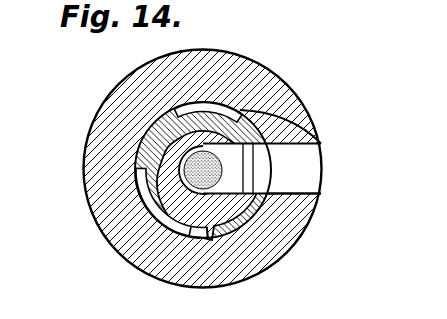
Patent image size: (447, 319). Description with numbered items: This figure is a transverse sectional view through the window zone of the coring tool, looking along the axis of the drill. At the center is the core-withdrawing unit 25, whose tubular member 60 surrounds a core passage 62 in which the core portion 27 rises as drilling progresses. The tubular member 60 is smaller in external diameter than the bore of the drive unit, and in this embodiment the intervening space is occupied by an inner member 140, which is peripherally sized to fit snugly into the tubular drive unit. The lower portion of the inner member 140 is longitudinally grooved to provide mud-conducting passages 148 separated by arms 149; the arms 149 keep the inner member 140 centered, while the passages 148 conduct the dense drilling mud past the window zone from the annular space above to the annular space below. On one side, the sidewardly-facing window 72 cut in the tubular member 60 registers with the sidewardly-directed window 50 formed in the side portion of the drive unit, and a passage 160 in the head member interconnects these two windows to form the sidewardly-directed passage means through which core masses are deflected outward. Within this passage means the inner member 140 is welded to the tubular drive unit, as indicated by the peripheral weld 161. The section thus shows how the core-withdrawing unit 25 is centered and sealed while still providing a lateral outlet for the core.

The core-withdrawing unit 25 is at (158, 155).
The core portion 27 is at (130, 230).
The window 50 is at (300, 194).
The tubular member 60 is at (231, 97).
The core passage 62 is at (165, 190).
The window 72 is at (268, 126).
The inner member 140 is at (208, 232).
The mud-conducting passages 148 is at (152, 135).
The arms 149 is at (172, 111).
The passage 160 is at (245, 176).
The peripheral weld 161 is at (278, 136).